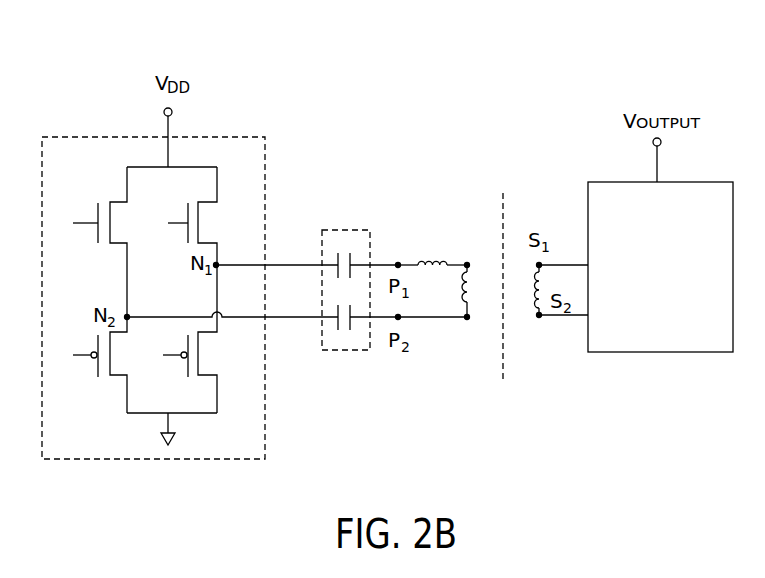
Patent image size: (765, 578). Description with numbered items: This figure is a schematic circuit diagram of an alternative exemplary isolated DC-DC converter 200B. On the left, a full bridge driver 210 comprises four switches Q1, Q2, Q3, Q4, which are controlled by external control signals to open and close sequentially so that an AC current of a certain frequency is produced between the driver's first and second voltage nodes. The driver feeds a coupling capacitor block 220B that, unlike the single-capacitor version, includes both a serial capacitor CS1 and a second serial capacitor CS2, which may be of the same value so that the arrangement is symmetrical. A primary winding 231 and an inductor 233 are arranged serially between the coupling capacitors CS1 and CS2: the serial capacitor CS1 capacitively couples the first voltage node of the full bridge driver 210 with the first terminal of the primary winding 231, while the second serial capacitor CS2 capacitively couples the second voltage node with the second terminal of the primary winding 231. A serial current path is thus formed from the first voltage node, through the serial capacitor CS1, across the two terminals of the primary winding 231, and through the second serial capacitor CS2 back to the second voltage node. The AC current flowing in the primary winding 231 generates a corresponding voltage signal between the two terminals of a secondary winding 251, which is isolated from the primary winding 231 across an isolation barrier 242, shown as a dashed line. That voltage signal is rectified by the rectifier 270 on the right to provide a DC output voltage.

The isolated DC-DC converter 200B is at (526, 89).
The full bridge driver 210 is at (153, 326).
The coupling capacitor block 220B is at (345, 314).
The primary winding 231 is at (469, 306).
The inductor 233 is at (436, 262).
The isolation barrier 242 is at (506, 207).
The secondary winding 251 is at (536, 311).
The rectifier 270 is at (633, 353).
The switch Q1 is at (74, 223).
The switch Q2 is at (74, 356).
The switch Q3 is at (166, 223).
The switch Q4 is at (164, 356).
The serial capacitor CS1 is at (350, 260).
The second serial capacitor CS2 is at (315, 305).